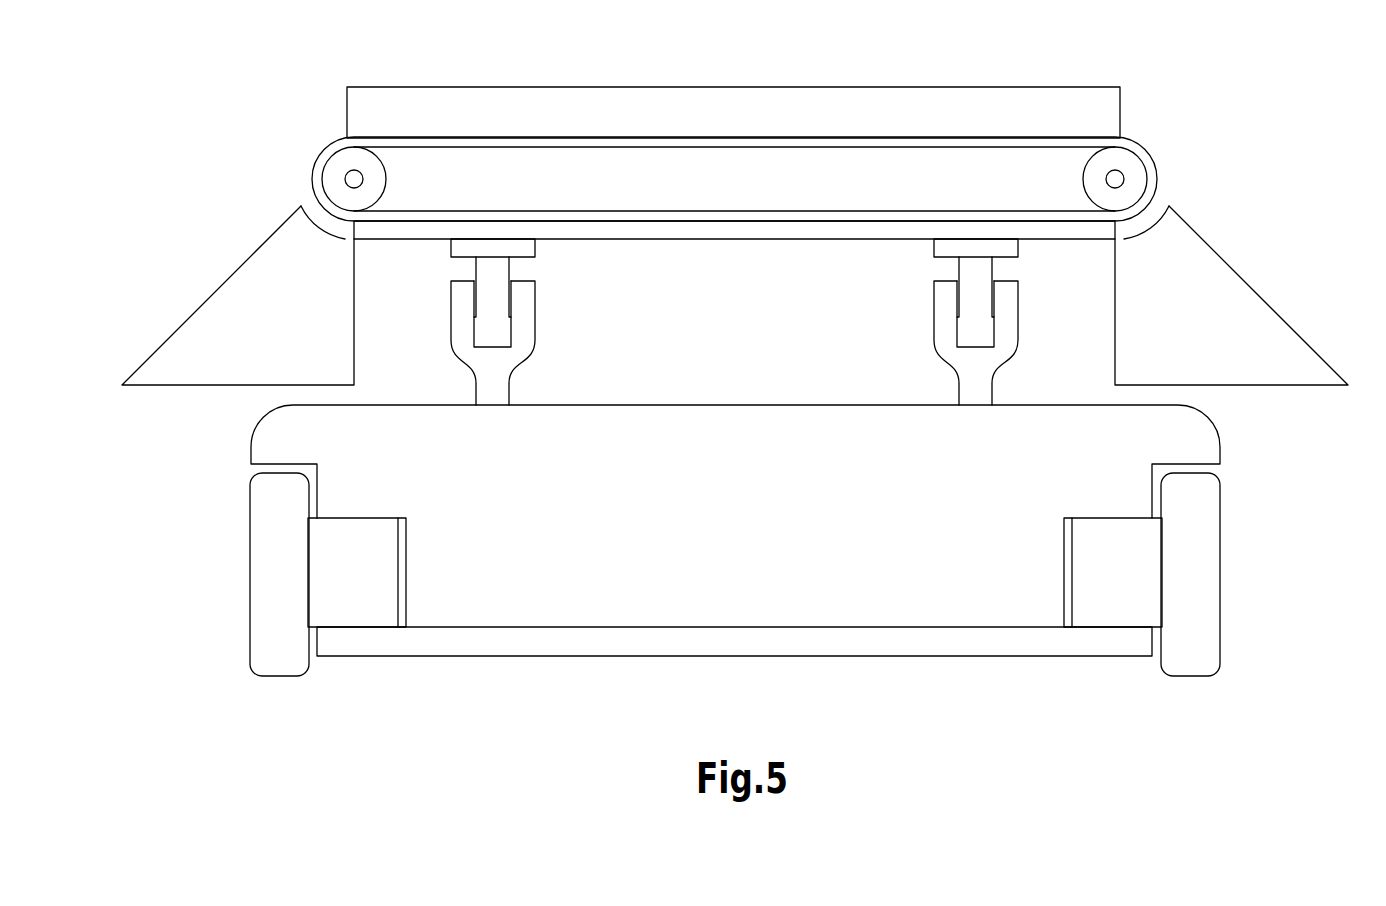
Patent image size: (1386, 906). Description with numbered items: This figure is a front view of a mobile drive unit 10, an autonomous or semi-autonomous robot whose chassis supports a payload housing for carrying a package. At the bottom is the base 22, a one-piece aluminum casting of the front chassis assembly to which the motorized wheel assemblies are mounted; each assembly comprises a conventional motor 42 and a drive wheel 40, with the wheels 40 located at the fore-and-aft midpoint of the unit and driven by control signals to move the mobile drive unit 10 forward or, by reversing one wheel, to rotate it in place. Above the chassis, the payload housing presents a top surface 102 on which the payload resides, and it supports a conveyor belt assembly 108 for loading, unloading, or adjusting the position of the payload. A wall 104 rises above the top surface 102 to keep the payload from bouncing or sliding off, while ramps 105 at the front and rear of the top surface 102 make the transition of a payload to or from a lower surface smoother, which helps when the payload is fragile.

The mobile drive unit 10 is at (190, 74).
The base 22 is at (772, 640).
The drive wheel 40 is at (276, 570).
The motor 42 is at (362, 587).
The top surface 102 is at (798, 142).
The wall 104 is at (538, 87).
The ramp 105 is at (197, 305).
The conveyor belt assembly 108 is at (1138, 177).